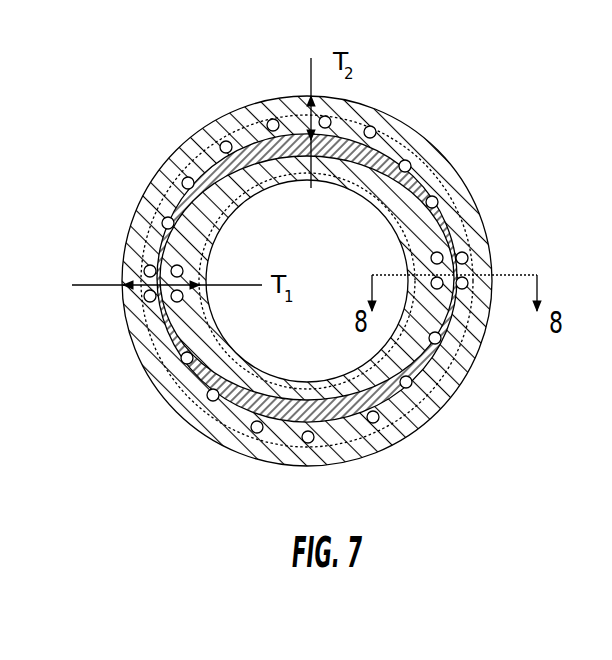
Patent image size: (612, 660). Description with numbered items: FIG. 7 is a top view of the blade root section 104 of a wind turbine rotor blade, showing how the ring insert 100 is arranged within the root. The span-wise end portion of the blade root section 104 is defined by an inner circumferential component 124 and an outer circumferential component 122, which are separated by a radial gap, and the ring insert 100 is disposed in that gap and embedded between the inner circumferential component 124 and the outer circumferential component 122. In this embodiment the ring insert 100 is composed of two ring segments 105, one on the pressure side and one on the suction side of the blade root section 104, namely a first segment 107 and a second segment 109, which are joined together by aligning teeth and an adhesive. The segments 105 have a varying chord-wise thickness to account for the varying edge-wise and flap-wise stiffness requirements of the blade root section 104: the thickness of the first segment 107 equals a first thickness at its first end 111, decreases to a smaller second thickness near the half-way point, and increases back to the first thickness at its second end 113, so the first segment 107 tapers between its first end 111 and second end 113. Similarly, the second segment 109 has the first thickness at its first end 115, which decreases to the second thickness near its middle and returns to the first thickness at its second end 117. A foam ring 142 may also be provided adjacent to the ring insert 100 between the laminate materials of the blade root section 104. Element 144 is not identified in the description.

The ring insert 100 is at (171, 191).
The blade root section 104 is at (498, 148).
The ring segments 105 is at (165, 347).
The first segment 107 is at (300, 117).
The second segment 109 is at (268, 445).
The first end 111 is at (145, 272).
The second end 113 is at (470, 255).
The first end 115 is at (148, 303).
The second end 117 is at (466, 305).
The outer circumferential component 122 is at (214, 113).
The inner circumferential component 124 is at (253, 183).
The foam ring 142 is at (285, 406).
The passage holes 144 is at (434, 197).